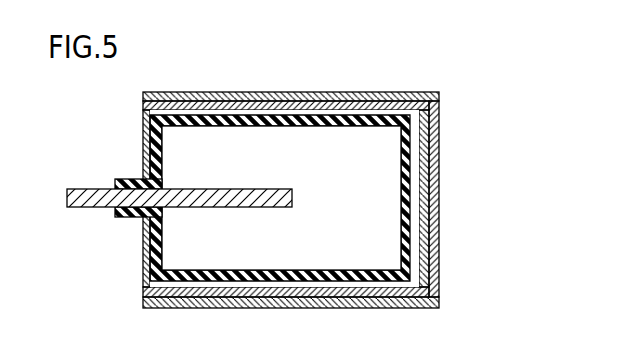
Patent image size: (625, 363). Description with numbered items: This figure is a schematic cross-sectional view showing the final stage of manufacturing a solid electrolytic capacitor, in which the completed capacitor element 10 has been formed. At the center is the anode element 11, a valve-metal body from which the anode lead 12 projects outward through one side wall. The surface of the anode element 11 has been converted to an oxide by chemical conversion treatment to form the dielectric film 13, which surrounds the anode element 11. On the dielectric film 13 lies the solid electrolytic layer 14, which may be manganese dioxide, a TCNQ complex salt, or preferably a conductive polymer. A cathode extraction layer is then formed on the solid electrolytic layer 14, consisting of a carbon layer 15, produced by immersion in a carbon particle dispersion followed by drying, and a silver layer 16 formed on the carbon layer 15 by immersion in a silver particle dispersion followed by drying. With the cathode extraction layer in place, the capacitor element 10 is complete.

The capacitor element 10 is at (491, 166).
The anode element 11 is at (370, 197).
The anode lead 12 is at (88, 196).
The dielectric film 13 is at (404, 220).
The solid electrolytic layer 14 is at (414, 238).
The carbon layer 15 is at (424, 259).
The silver layer 16 is at (432, 285).